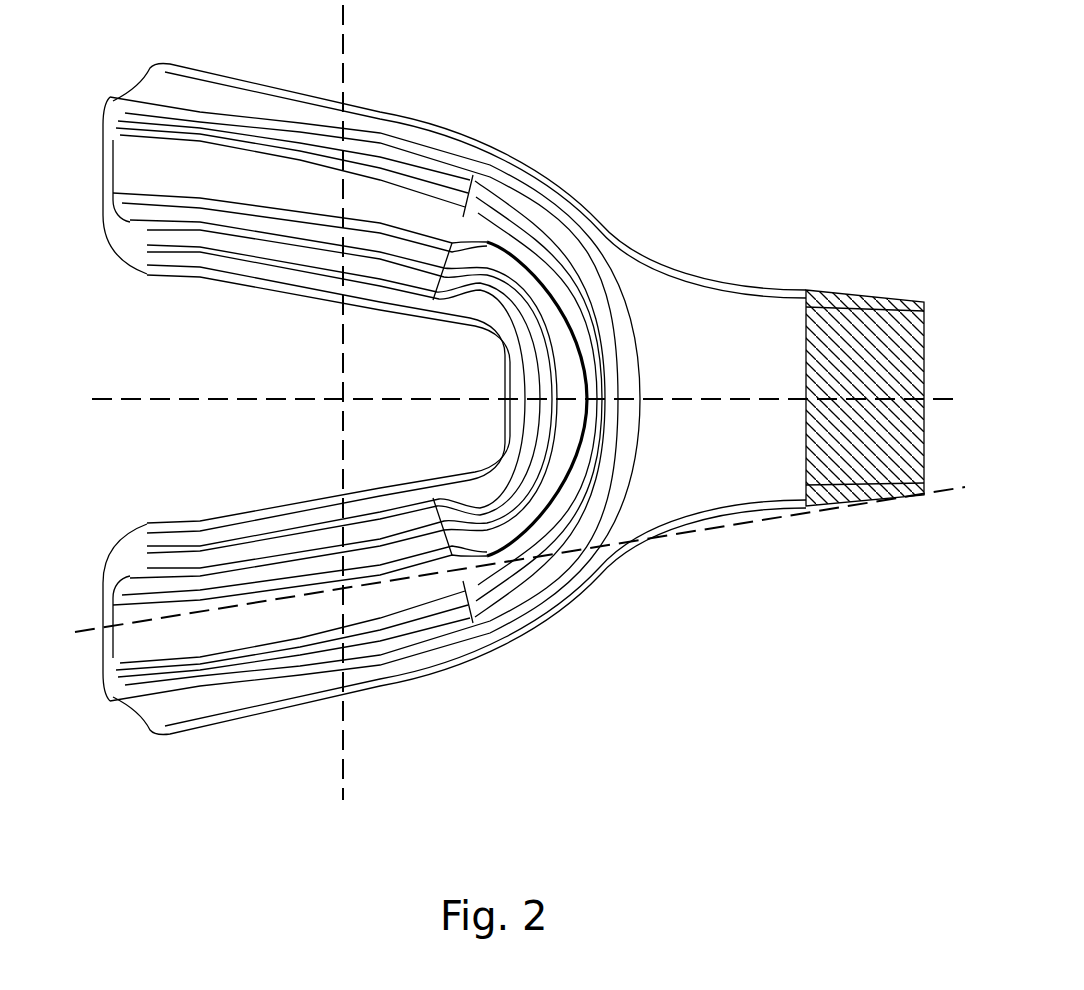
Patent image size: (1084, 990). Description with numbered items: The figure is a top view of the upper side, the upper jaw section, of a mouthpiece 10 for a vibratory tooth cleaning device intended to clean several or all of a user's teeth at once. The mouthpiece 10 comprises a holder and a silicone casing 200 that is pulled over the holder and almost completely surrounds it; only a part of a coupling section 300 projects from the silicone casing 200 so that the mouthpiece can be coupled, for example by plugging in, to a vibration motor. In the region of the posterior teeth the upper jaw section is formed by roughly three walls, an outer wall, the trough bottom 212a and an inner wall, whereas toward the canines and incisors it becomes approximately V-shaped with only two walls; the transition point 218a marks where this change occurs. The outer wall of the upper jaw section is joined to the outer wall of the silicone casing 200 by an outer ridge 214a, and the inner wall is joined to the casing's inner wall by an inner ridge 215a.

The mouthpiece 10 is at (503, 416).
The silicone casing 200 is at (454, 369).
The trough bottom 212a is at (181, 175).
The outer ridge 214a is at (147, 105).
The inner ridge 215a is at (134, 226).
The transition point 218a is at (485, 548).
The coupling section 300 is at (842, 282).